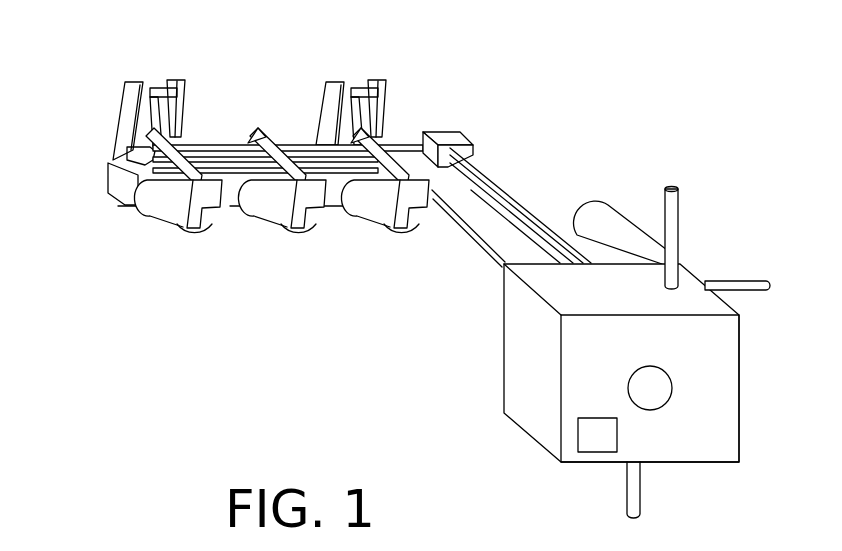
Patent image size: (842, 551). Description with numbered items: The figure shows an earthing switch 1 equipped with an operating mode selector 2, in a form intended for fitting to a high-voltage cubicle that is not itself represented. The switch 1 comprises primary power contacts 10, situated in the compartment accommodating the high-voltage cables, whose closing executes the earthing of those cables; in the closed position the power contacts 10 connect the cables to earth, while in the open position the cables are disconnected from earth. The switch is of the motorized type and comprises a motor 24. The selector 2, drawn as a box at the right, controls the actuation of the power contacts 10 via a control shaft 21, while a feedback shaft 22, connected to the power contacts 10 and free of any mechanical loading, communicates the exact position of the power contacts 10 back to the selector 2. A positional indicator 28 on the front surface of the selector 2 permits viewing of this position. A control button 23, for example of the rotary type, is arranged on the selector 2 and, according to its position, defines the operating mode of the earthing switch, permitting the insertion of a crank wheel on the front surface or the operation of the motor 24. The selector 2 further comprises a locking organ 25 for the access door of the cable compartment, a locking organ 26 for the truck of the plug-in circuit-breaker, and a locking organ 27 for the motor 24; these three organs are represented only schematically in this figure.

The earthing switch 1 is at (93, 56).
The operating mode selector 2 is at (527, 382).
The primary power contacts 10 is at (287, 142).
The control shaft 21 is at (493, 176).
The feedback shaft 22 is at (464, 230).
The control button 23 is at (650, 388).
The motor 24 is at (608, 210).
The locking organ for the door 25 is at (633, 490).
The locking organ for the truck 26 is at (673, 203).
The locking organ for the motor 27 is at (745, 286).
The positional indicator 28 is at (597, 440).